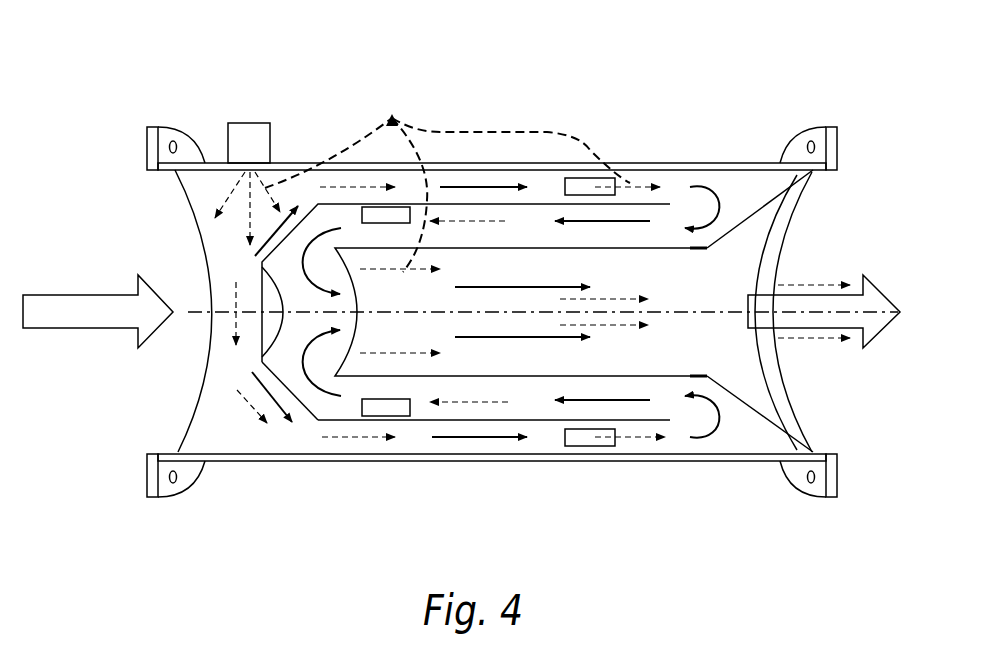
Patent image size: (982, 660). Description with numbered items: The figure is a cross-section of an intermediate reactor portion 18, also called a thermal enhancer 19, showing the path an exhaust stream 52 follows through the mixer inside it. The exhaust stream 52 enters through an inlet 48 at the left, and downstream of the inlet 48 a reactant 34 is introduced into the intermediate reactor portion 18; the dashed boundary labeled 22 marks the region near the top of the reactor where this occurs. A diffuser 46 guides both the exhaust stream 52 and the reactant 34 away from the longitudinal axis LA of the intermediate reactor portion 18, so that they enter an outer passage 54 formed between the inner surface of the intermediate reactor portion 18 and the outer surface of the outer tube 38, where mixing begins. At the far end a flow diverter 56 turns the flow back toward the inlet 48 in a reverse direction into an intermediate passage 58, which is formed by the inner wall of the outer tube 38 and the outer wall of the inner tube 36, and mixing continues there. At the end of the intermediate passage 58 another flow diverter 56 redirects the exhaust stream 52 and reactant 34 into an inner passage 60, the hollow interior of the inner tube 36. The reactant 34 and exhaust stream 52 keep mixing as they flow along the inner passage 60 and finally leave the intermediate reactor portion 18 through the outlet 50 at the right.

The intermediate reactor portion 18 is at (479, 248).
The thermal enhancer 19 is at (492, 475).
The inlet flow region 22 is at (570, 125).
The reactant 34 is at (797, 285).
The inner tube 36 is at (422, 382).
The outer tube 38 is at (348, 425).
The diffuser 46 is at (263, 343).
The inlet 48 is at (160, 415).
The outlet 50 is at (808, 390).
The exhaust stream 52 is at (98, 303).
The outer passage 54 is at (558, 447).
The flow diverter 56 is at (757, 215).
The intermediate passage 58 is at (532, 407).
The inner passage 60 is at (637, 355).
The longitudinal axis LA is at (200, 273).